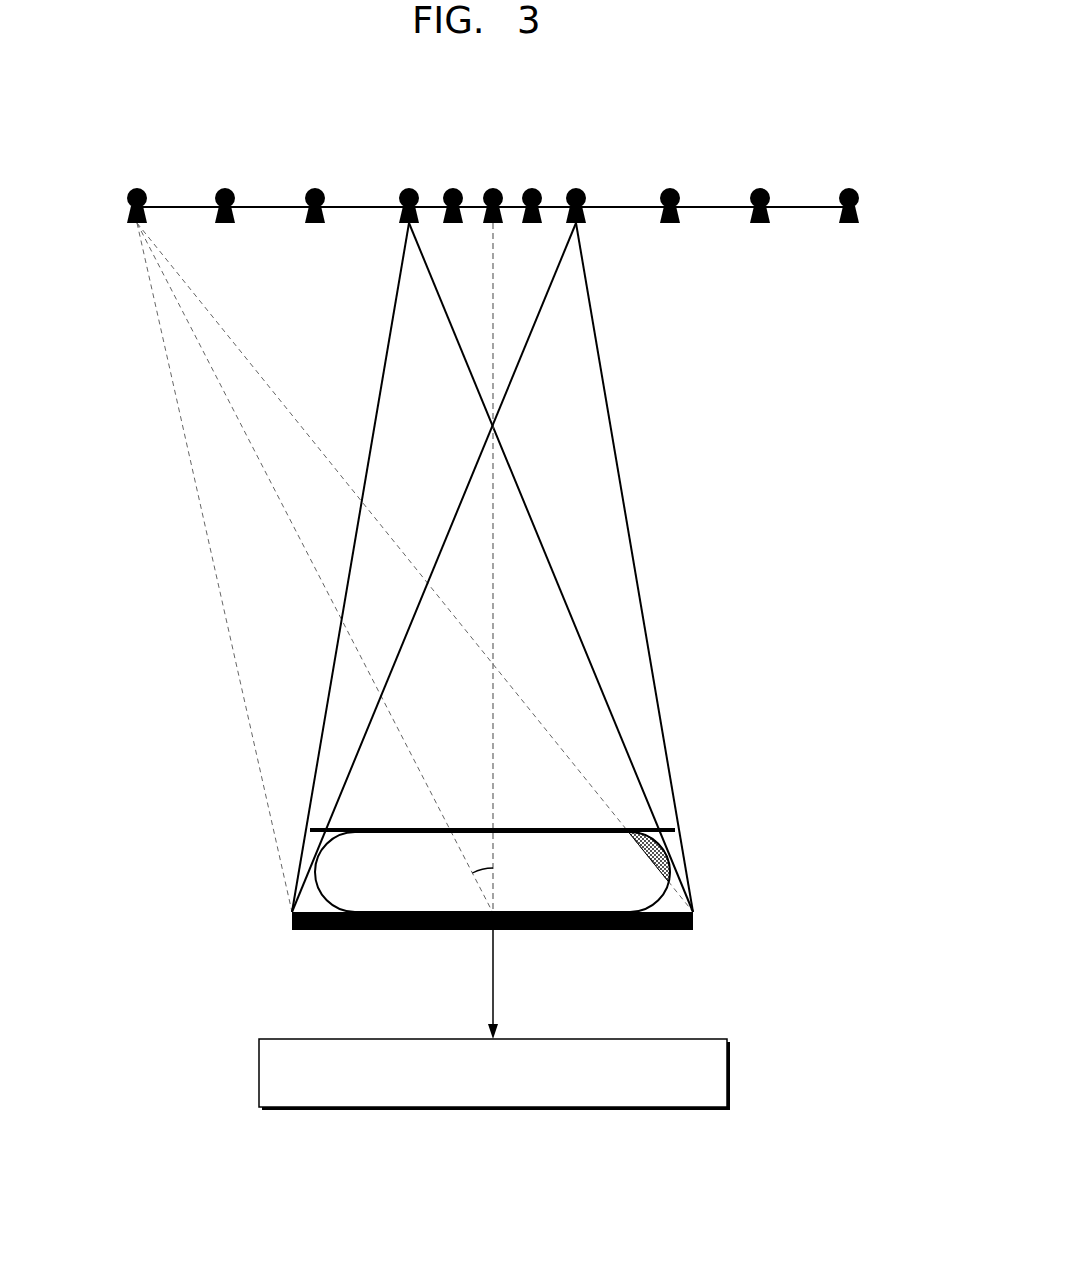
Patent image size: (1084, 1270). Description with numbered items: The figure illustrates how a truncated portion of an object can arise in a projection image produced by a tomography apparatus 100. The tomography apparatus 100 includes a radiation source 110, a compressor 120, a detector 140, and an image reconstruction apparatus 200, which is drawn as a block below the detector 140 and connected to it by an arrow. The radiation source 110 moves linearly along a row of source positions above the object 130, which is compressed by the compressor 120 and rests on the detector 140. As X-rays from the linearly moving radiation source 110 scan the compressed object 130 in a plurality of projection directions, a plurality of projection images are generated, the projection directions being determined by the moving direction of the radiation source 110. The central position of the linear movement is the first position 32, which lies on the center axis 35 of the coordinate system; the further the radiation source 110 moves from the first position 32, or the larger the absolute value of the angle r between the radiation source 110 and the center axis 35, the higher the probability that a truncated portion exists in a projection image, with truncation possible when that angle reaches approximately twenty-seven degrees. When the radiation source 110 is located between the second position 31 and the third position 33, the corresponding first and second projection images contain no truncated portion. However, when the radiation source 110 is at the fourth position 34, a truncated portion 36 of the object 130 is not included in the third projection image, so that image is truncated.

The tomography apparatus 100 is at (283, 148).
The radiation source 110 is at (849, 188).
The second position 31 is at (577, 188).
The first position 32 is at (493, 188).
The third position 33 is at (410, 188).
The fourth position 34 is at (139, 188).
The center axis 35 is at (491, 932).
The truncated portion 36 is at (664, 860).
The angle r is at (482, 855).
The compressor 120 is at (427, 828).
The object 130 is at (318, 880).
The detector 140 is at (656, 932).
The image reconstruction apparatus 200 is at (548, 1039).